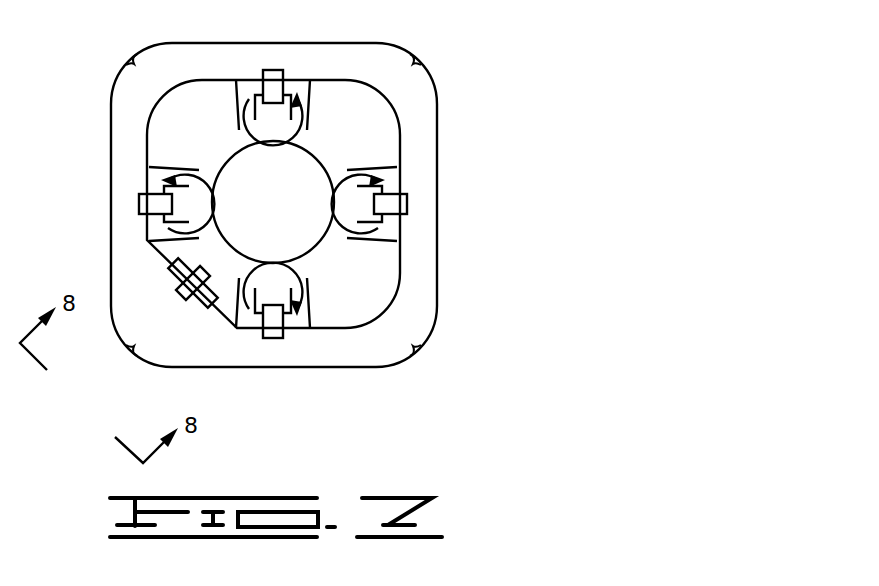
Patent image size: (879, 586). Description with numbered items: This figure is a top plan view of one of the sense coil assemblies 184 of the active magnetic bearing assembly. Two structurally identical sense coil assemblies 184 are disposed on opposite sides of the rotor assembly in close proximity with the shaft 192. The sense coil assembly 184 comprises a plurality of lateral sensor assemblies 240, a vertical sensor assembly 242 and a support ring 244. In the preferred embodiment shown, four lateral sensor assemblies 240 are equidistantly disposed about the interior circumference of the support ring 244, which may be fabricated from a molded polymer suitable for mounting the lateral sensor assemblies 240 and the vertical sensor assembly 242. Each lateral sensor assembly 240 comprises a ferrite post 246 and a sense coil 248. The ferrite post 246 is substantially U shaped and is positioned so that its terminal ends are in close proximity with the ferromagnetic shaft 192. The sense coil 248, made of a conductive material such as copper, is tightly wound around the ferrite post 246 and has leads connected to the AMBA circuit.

The sense coil assembly 184 is at (432, 40).
The shaft 192 is at (312, 166).
The lateral sensor assembly 240 is at (400, 175).
The vertical sensor assembly 242 is at (163, 265).
The support ring 244 is at (417, 284).
The ferrite post 246 is at (393, 222).
The sense coil 248 is at (397, 204).